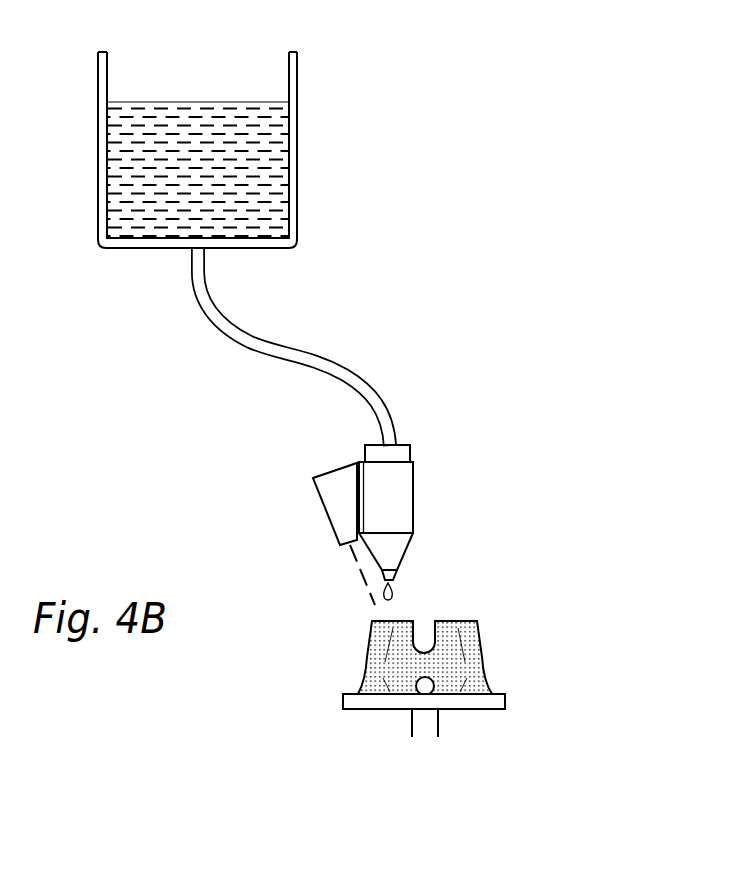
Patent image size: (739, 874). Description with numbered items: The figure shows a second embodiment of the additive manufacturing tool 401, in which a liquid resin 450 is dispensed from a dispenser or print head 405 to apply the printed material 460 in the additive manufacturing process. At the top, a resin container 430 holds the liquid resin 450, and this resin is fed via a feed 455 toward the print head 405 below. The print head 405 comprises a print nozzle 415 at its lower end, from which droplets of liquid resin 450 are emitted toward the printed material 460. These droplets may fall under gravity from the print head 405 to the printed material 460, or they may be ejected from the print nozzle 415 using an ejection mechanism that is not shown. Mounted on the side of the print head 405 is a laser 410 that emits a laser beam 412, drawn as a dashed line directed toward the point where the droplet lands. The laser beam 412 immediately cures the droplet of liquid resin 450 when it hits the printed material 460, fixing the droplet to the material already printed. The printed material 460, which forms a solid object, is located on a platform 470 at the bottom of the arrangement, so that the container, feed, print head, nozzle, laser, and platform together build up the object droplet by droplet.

The additive manufacturing tool 401 is at (505, 208).
The print head 405 is at (407, 488).
The laser 410 is at (333, 497).
The laser beam 412 is at (362, 572).
The print nozzle 415 is at (395, 578).
The resin container 430 is at (297, 149).
The liquid resin 450 is at (205, 127).
The feed 455 is at (358, 371).
The printed material 460 is at (477, 642).
The platform 470 is at (498, 701).